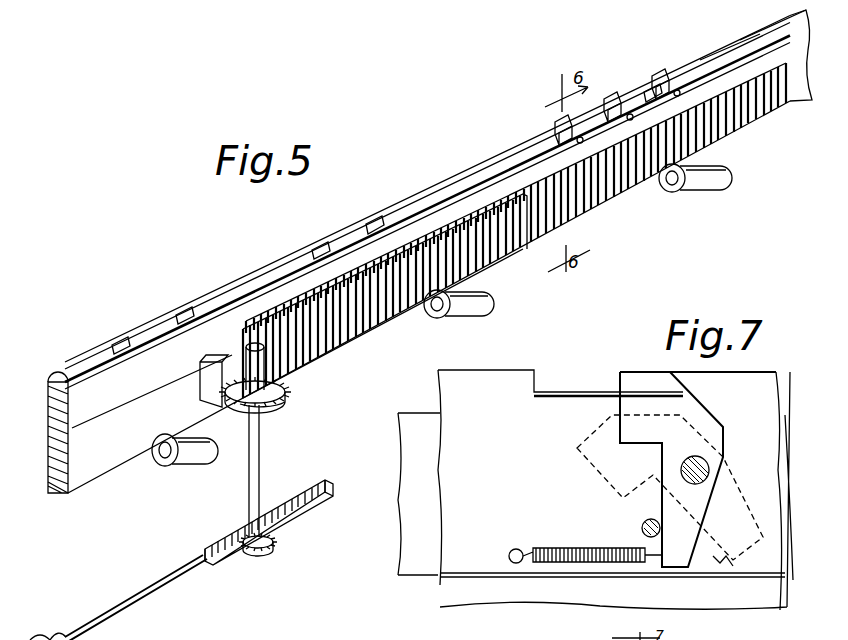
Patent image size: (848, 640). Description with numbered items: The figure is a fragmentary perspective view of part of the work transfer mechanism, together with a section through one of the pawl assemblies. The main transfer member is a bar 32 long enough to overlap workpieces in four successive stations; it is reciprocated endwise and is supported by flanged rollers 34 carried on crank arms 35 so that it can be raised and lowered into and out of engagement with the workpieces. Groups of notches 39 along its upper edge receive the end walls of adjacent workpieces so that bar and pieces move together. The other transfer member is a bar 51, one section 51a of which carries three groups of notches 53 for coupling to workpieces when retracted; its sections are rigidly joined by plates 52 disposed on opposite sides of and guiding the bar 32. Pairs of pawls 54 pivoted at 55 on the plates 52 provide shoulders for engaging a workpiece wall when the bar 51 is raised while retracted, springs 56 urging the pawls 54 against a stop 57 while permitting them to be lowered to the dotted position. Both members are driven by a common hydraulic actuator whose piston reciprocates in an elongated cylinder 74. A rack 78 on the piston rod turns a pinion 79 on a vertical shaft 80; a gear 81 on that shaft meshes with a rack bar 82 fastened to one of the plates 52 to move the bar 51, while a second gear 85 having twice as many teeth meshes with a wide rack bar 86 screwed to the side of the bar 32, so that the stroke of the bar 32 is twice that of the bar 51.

In FIG. 5, the bar 32 is at (128, 465).
In FIG. 7, the bar 32 is at (515, 606).
In FIG. 5, the flanged rollers 34 is at (160, 465).
In FIG. 5, the crank arms 35 is at (192, 455).
In FIG. 5, the notches 39 is at (180, 320).
In FIG. 7, the notches 39 is at (574, 392).
In FIG. 5, the bar 51 is at (800, 72).
In FIG. 5, the section 51a is at (760, 44).
In FIG. 5, the plates 52 is at (78, 368).
In FIG. 7, the plates 52 is at (424, 565).
In FIG. 5, the notches 53 is at (795, 22).
In FIG. 5, the pawls 54 is at (562, 122).
In FIG. 7, the pawls 54 is at (700, 414).
In FIG. 5, the pivot 55 is at (682, 94).
In FIG. 7, the pivot 55 is at (710, 468).
In FIG. 7, the springs 56 is at (585, 547).
In FIG. 7, the stop 57 is at (643, 527).
In FIG. 5, the cylinder 74 is at (40, 636).
In FIG. 5, the rack 78 is at (288, 512).
In FIG. 5, the pinion 79 is at (268, 548).
In FIG. 5, the vertical shaft 80 is at (262, 440).
In FIG. 5, the gear 81 is at (228, 355).
In FIG. 5, the rack bar 82 is at (366, 292).
In FIG. 5, the second gear 85 is at (283, 398).
In FIG. 5, the wide rack bar 86 is at (352, 335).